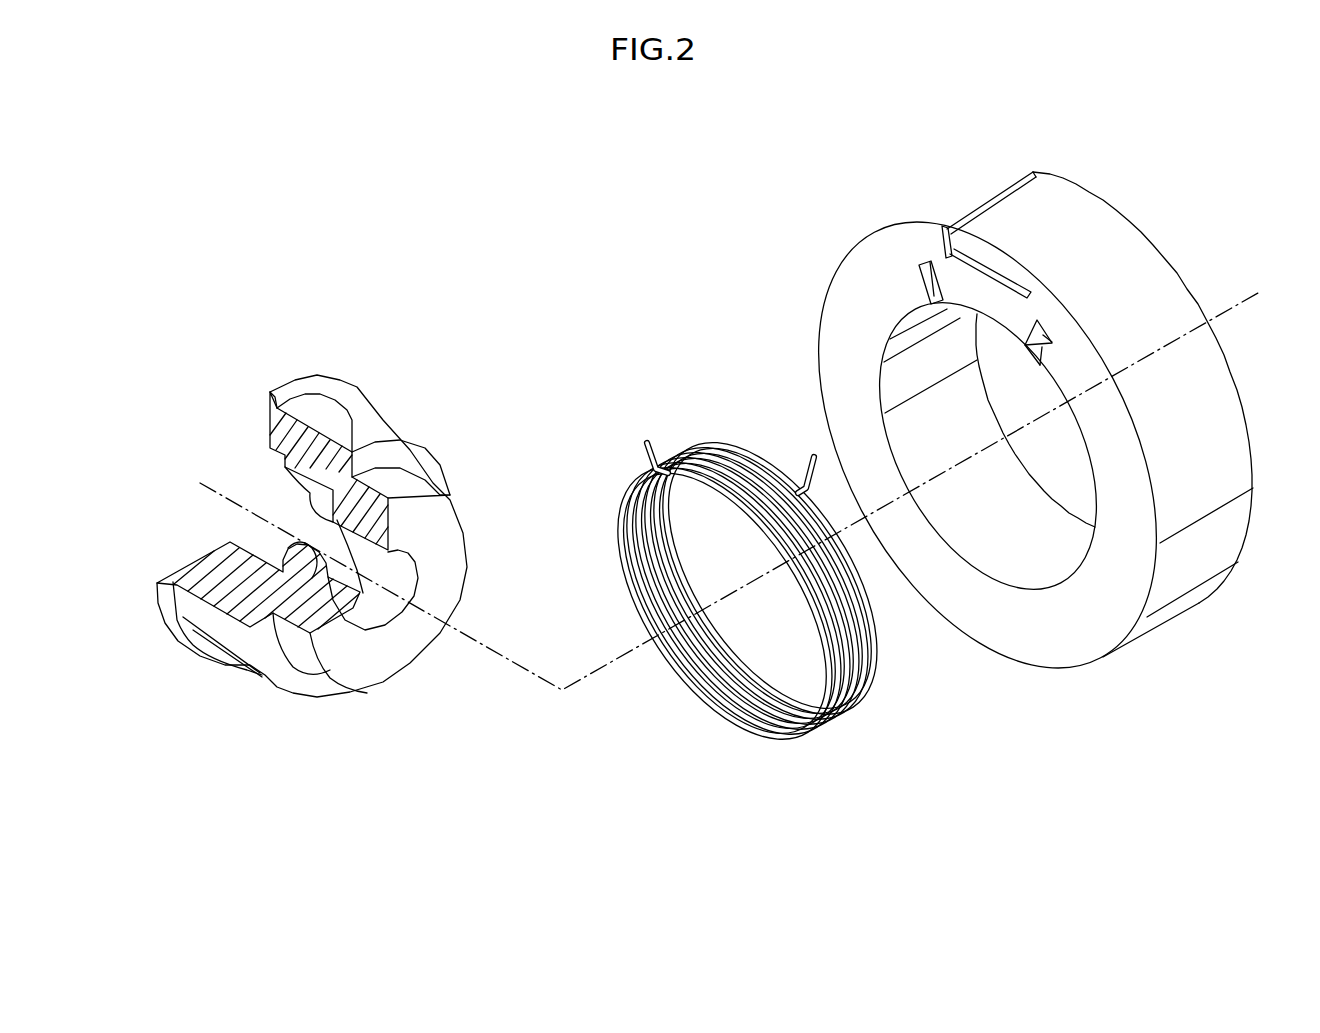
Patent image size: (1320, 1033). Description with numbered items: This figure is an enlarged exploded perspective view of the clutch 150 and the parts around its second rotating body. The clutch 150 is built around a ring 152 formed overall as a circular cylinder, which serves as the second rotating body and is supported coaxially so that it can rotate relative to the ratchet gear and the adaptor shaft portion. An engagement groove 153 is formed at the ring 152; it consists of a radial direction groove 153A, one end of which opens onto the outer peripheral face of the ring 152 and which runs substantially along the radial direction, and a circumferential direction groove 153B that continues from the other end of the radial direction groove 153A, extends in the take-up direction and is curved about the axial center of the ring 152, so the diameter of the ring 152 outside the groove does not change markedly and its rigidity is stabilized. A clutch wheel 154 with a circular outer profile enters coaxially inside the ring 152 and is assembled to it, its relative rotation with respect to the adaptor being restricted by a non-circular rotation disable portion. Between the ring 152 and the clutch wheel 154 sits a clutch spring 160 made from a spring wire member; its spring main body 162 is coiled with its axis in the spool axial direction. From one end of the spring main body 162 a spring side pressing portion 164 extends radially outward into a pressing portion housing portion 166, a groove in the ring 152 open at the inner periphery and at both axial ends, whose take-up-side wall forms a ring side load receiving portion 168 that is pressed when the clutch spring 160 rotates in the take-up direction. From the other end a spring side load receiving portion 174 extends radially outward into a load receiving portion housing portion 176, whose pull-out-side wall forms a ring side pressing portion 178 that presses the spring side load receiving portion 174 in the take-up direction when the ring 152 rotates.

The clutch 150 is at (445, 207).
The ring 152 is at (1077, 222).
The engagement groove 153 is at (967, 212).
The radial direction groove 153A is at (1029, 173).
The circumferential direction groove 153B is at (1047, 282).
The clutch wheel 154 is at (364, 424).
The clutch spring 160 is at (636, 722).
The spring main body 162 is at (719, 741).
The spring side pressing portion 164 is at (808, 449).
The pressing portion housing portion 166 is at (1052, 340).
The ring side load receiving portion 168 is at (1045, 352).
The spring side load receiving portion 174 is at (652, 437).
The load receiving portion housing portion 176 is at (922, 266).
The ring side pressing portion 178 is at (932, 300).